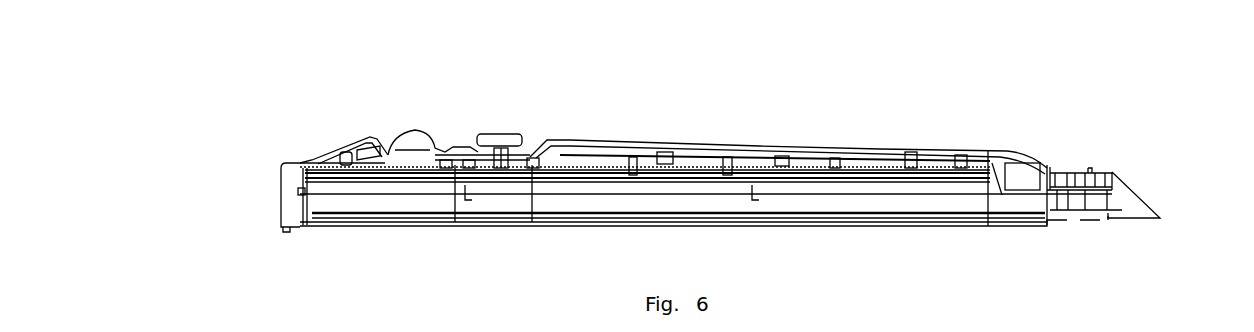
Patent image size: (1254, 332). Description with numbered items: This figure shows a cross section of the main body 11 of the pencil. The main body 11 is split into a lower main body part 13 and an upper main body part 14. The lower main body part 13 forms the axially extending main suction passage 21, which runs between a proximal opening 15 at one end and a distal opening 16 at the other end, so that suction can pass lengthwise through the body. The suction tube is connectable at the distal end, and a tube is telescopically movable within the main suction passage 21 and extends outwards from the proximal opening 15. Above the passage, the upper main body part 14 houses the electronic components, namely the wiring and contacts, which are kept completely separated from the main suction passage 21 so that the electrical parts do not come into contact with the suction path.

The main body 11 is at (675, 178).
The lower main body part 13 is at (935, 227).
The upper main body part 14 is at (780, 158).
The proximal opening 15 is at (278, 195).
The distal opening 16 is at (1145, 197).
The main suction passage 21 is at (865, 197).